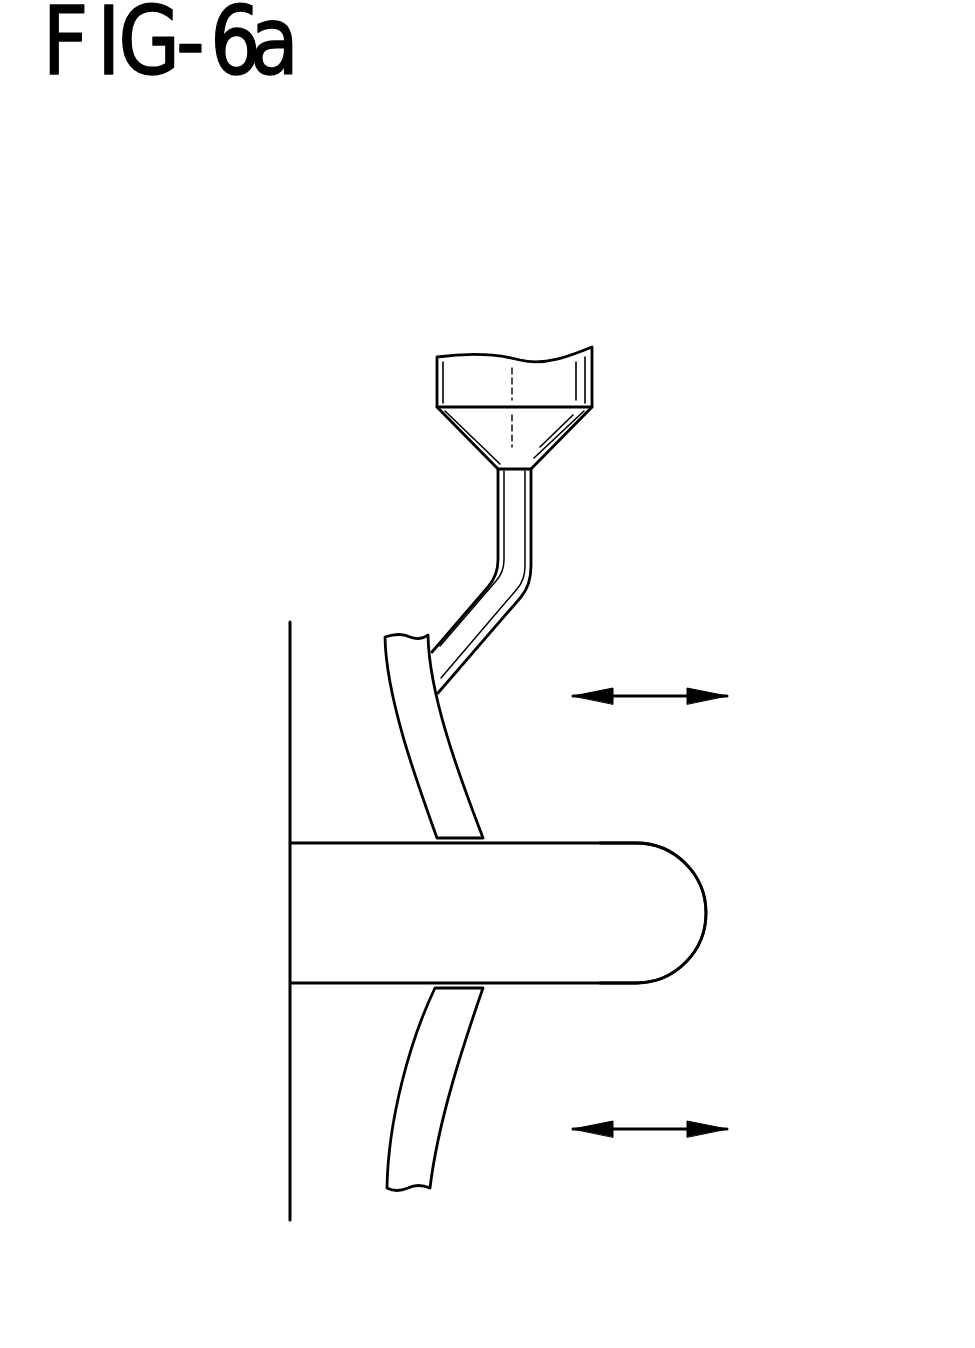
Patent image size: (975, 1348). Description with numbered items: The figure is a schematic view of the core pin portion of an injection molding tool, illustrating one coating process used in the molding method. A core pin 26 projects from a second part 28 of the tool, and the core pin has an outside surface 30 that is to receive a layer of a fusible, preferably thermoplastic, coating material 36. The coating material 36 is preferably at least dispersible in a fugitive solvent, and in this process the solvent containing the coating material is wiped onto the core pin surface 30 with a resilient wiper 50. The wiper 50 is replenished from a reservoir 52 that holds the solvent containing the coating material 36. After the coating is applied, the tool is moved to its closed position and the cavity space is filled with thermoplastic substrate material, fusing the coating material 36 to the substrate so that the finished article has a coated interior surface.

The core pin 26 is at (525, 985).
The second part 28 is at (290, 1073).
The outside surface 30 is at (680, 915).
The coating material 36 is at (587, 867).
The resilient wiper 50 is at (412, 687).
The reservoir 52 is at (567, 392).